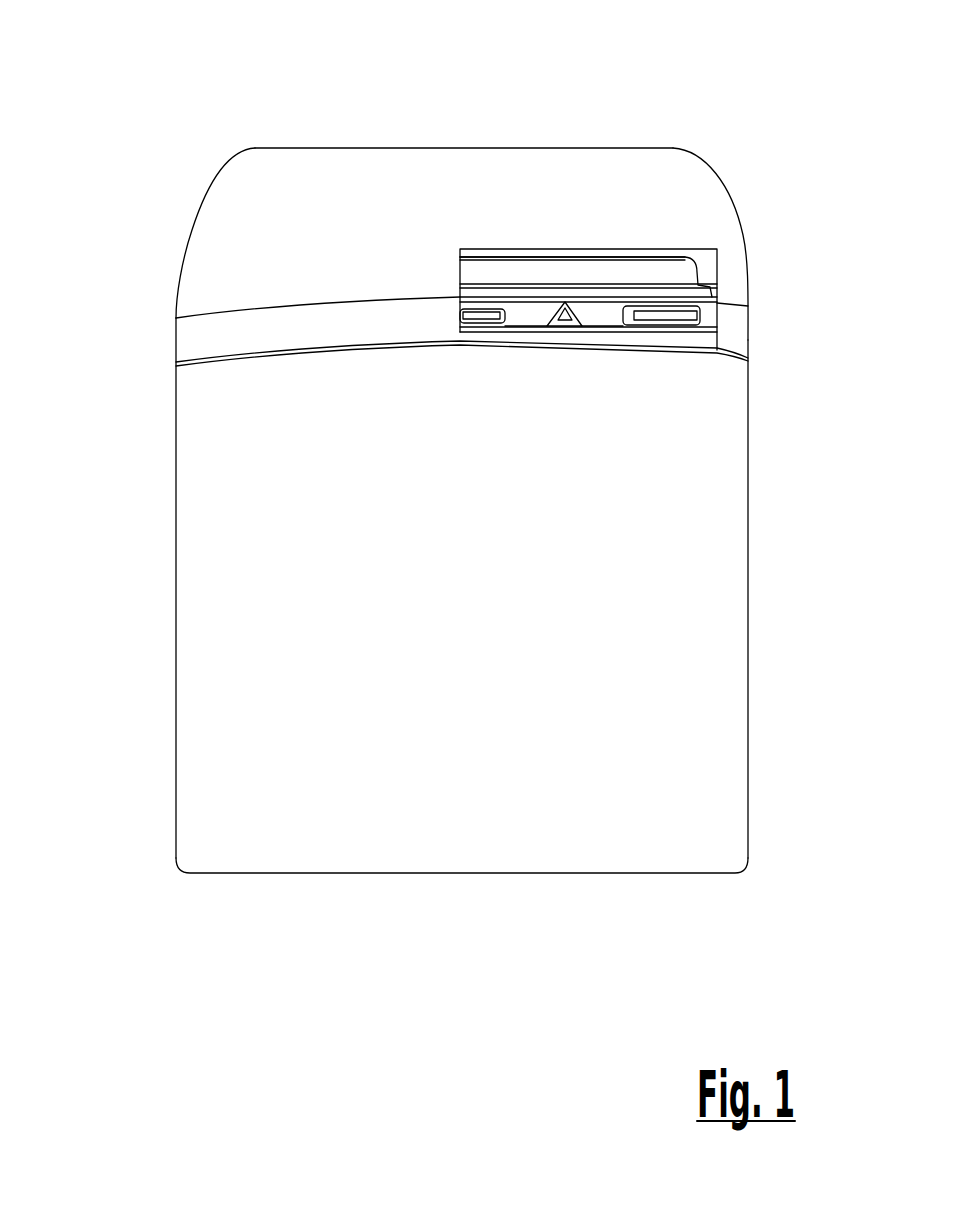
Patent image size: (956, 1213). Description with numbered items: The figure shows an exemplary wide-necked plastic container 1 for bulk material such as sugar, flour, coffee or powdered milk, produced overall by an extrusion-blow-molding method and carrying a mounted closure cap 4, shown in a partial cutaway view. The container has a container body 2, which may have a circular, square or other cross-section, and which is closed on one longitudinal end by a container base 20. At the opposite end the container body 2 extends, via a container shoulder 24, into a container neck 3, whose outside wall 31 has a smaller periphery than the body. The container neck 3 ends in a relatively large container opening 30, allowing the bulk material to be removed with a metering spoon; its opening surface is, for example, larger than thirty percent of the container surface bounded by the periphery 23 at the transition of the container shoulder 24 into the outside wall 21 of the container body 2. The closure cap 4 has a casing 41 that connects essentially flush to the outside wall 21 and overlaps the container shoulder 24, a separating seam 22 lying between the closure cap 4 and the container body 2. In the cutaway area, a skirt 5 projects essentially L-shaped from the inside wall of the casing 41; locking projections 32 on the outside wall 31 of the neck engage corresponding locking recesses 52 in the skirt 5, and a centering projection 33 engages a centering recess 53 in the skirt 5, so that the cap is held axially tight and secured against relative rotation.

The wide-necked plastic container 1 is at (132, 618).
The container body 2 is at (730, 742).
The container base 20 is at (253, 873).
The outside wall of the container body 21 is at (726, 590).
The separating seam 22 is at (178, 365).
The periphery 23 is at (176, 366).
The container shoulder 24 is at (463, 360).
The container neck 3 is at (695, 273).
The container opening 30 is at (596, 232).
The outside wall of the container neck 31 is at (524, 270).
The locking projection 32 is at (653, 314).
The centering projection 33 is at (567, 301).
The closure cap 4 is at (196, 170).
The casing 41 is at (175, 305).
The skirt 5 is at (720, 304).
The locking recess 52 is at (460, 298).
The centering recess 53 is at (575, 325).